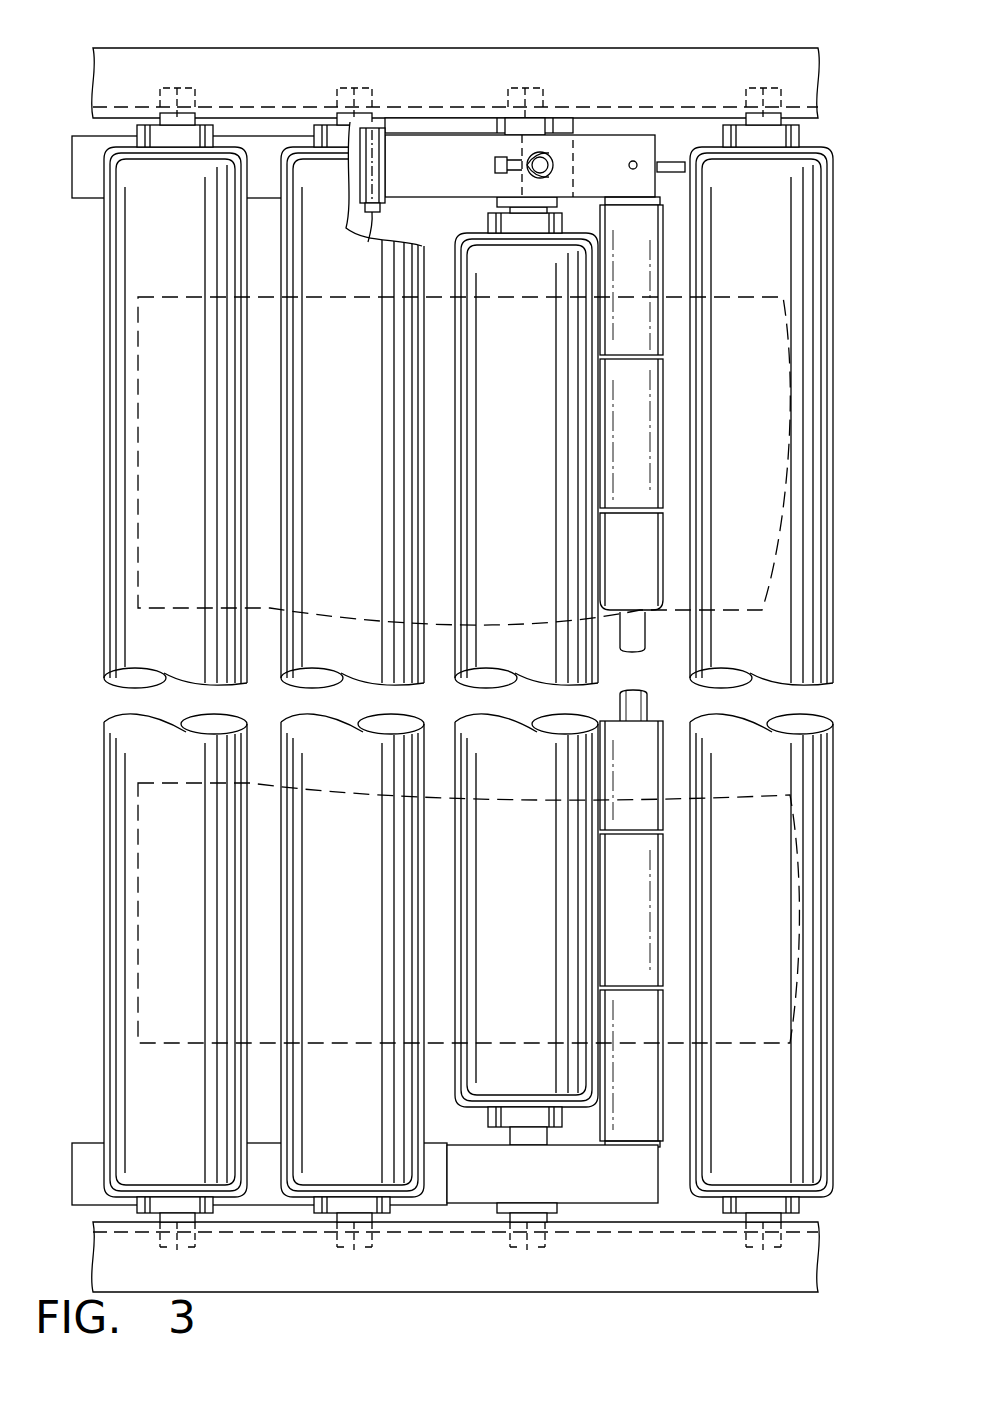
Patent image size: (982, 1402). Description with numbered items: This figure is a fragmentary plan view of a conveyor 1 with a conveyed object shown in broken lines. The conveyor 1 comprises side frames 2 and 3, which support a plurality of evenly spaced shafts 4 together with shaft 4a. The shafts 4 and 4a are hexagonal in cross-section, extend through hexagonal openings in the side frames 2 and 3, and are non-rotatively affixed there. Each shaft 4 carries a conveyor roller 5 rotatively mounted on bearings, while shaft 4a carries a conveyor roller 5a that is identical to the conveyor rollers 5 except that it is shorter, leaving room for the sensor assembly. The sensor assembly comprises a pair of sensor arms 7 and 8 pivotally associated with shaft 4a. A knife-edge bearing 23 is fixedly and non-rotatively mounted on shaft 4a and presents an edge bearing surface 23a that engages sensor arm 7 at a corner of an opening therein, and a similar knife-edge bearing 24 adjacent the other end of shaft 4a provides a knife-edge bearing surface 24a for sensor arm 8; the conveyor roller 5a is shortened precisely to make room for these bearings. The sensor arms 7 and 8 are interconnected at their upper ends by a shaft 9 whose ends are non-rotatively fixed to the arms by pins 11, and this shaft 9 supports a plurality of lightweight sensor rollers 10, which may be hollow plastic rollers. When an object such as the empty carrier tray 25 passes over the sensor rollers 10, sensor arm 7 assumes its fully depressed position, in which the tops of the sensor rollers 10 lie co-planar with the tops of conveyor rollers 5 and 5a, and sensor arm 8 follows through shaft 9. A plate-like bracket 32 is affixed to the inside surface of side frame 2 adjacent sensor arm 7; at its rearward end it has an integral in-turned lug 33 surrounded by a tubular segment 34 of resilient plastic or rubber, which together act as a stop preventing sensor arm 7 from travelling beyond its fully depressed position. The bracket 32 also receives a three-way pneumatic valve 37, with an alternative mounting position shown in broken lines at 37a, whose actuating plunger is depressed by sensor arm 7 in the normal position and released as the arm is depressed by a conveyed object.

The conveyor 1 is at (240, 46).
The side frame 2 is at (266, 70).
The side frame 3 is at (255, 1270).
The shaft 4 is at (160, 1245).
The shaft 4a is at (545, 1246).
The conveyor roller 5 is at (140, 1087).
The conveyor roller 5a is at (488, 1090).
The sensor arm 7 is at (400, 142).
The sensor arm 8 is at (598, 1190).
The shaft 9 is at (640, 700).
The sensor roller 10 is at (650, 385).
The pin 11 is at (634, 161).
The knife-edge bearing 23 is at (545, 128).
The edge bearing surface 23a is at (540, 125).
The knife-edge bearing 24 is at (540, 1205).
The knife-edge bearing surface 24a is at (500, 1207).
The carrier tray 25 is at (735, 297).
The bracket 32 is at (450, 116).
The lug 33 is at (368, 228).
The tubular segment 34 is at (373, 165).
The pneumatic valve 37 is at (556, 164).
The pneumatic valve 37a is at (505, 165).